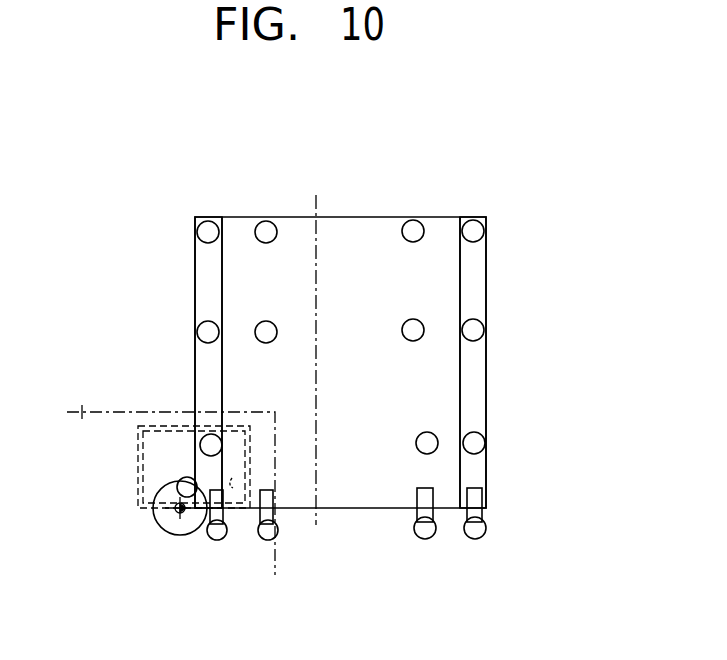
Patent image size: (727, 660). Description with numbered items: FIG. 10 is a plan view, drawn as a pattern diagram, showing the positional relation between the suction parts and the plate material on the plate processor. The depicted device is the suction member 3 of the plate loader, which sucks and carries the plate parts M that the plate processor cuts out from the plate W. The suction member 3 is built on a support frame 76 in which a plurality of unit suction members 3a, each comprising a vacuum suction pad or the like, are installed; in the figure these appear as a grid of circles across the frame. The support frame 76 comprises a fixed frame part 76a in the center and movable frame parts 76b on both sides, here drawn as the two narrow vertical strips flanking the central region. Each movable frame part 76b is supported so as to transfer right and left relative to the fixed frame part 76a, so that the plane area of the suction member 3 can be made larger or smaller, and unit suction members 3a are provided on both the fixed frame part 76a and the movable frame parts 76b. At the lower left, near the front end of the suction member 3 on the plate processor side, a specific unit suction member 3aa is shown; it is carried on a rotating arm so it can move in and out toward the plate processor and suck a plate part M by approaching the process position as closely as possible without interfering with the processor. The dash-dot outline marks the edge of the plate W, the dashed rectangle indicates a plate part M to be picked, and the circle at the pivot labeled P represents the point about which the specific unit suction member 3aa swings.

The suction member 3 is at (503, 225).
The unit suction member 3a is at (200, 335).
The specific unit suction member 3aa is at (176, 492).
The support frame 76 is at (430, 217).
The fixed frame part 76a is at (354, 240).
The movable frame part 76b is at (200, 268).
The plate W is at (82, 412).
The plate part M is at (155, 463).
The reference point P is at (186, 516).